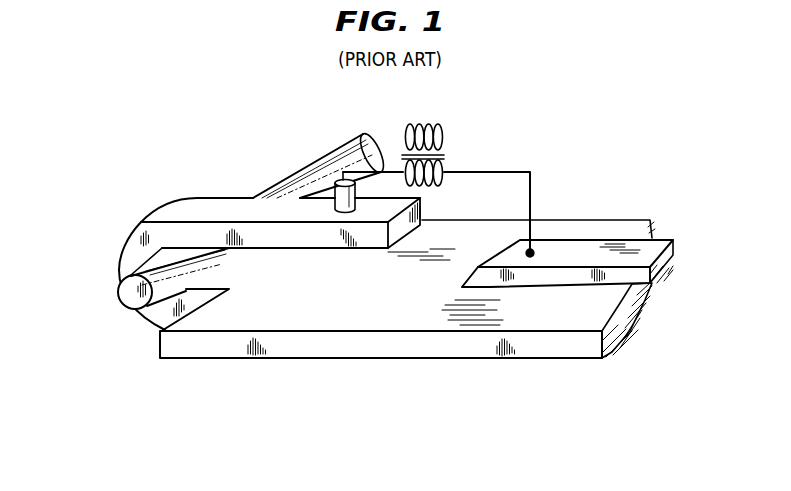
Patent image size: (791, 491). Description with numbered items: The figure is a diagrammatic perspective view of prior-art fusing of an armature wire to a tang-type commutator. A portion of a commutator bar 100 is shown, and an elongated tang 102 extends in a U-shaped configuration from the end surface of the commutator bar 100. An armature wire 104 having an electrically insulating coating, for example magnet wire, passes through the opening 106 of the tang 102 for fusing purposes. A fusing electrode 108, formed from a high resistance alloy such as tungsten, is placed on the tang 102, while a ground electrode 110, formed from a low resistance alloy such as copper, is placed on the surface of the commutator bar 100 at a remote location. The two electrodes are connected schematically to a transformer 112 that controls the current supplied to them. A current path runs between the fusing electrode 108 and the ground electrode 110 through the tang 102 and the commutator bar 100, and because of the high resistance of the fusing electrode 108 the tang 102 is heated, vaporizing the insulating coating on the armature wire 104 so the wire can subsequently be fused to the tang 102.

The commutator bar 100 is at (542, 347).
The tang 102 is at (150, 196).
The armature wire 104 is at (128, 298).
The opening 106 is at (262, 263).
The fusing electrode 108 is at (334, 183).
The ground electrode 110 is at (578, 248).
The transformer 112 is at (447, 153).